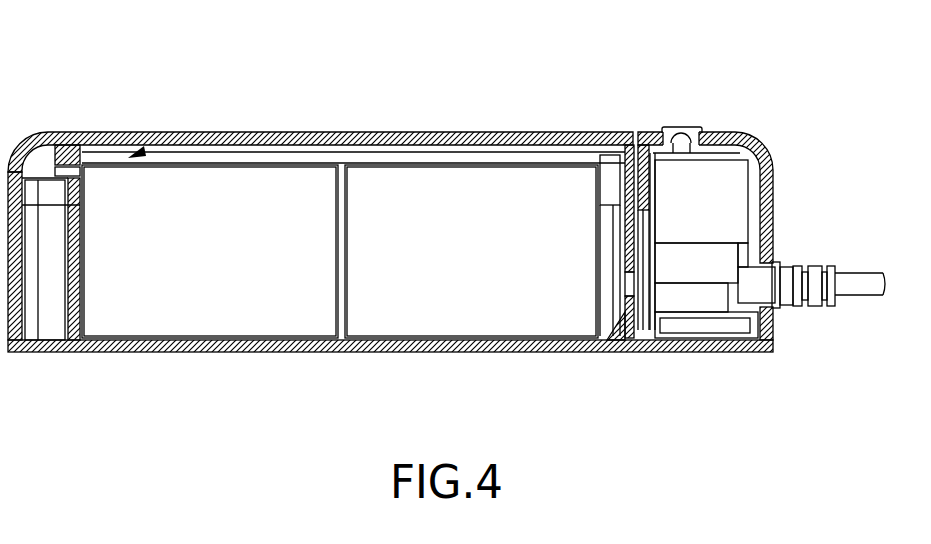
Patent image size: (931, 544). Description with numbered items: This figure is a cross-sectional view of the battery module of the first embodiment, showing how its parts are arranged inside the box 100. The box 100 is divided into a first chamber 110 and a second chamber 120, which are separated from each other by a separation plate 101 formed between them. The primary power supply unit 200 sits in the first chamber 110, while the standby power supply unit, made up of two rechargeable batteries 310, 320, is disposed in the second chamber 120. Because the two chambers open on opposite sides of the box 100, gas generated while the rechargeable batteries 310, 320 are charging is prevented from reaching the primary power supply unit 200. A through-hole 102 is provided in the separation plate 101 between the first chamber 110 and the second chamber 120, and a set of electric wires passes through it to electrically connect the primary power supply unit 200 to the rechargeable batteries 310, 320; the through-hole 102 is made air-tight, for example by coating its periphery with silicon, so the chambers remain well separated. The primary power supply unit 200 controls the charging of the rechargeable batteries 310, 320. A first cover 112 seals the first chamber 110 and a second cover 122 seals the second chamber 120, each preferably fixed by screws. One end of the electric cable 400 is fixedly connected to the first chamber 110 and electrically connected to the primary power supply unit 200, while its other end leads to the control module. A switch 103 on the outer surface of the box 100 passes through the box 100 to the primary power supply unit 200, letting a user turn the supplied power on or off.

The box 100 is at (340, 124).
The separation plate 101 is at (627, 303).
The through-hole 102 is at (632, 285).
The switch 103 is at (683, 128).
The first chamber 110 is at (750, 253).
The first cover 112 is at (700, 352).
The second chamber 120 is at (115, 133).
The second cover 122 is at (393, 134).
The primary power supply unit 200 is at (740, 190).
The rechargeable battery 310 is at (463, 185).
The rechargeable battery 320 is at (212, 185).
The electric cable 400 is at (857, 288).